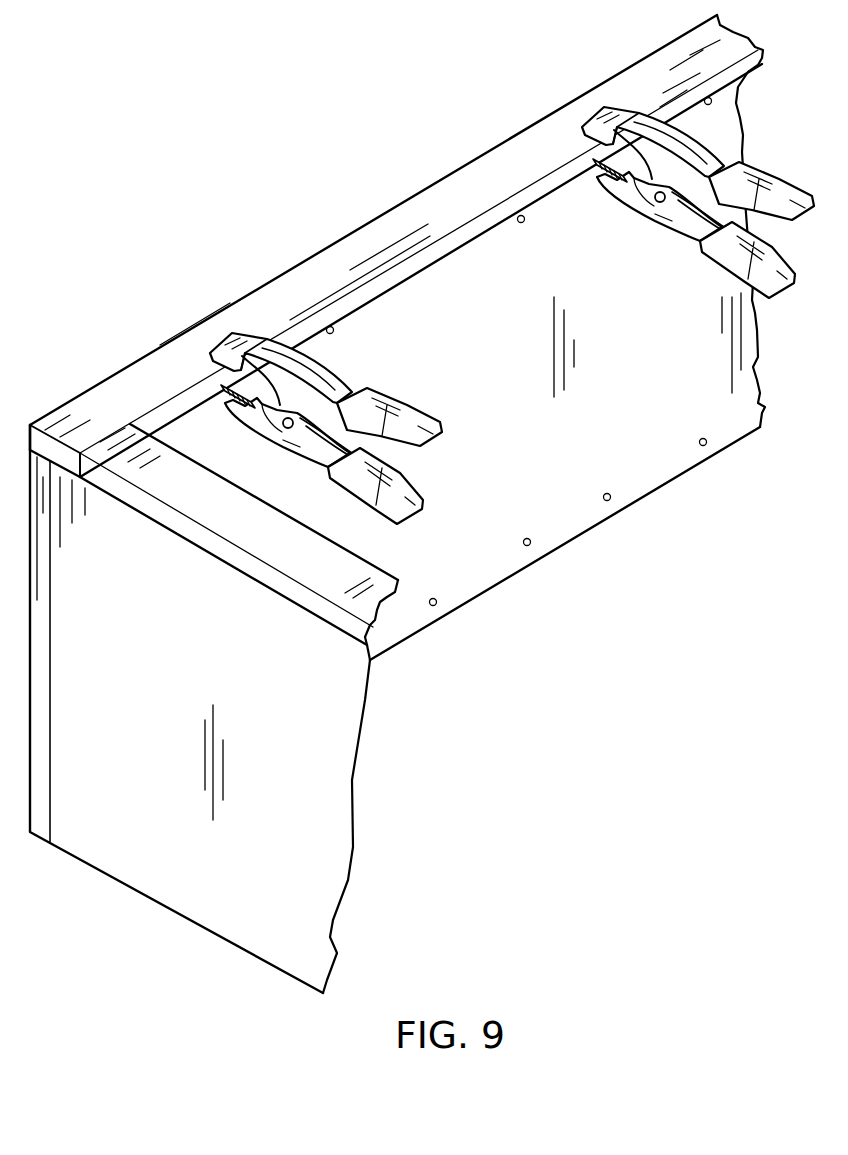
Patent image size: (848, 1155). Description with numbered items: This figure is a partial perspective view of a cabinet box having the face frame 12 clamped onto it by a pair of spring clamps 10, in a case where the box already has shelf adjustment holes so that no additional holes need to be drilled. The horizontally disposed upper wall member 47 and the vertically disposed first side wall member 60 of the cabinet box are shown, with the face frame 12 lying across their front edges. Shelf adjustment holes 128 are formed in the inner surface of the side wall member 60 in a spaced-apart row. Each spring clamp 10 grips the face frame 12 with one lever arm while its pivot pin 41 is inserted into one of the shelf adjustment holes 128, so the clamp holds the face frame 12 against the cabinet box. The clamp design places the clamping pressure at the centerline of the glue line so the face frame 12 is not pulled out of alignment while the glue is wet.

The spring clamp 10 is at (375, 371).
The face frame 12 is at (347, 230).
The pivot pin 41 is at (228, 396).
The upper wall member 47 is at (256, 888).
The first side wall member 60 is at (508, 468).
The shelf adjustment holes 128 is at (334, 328).